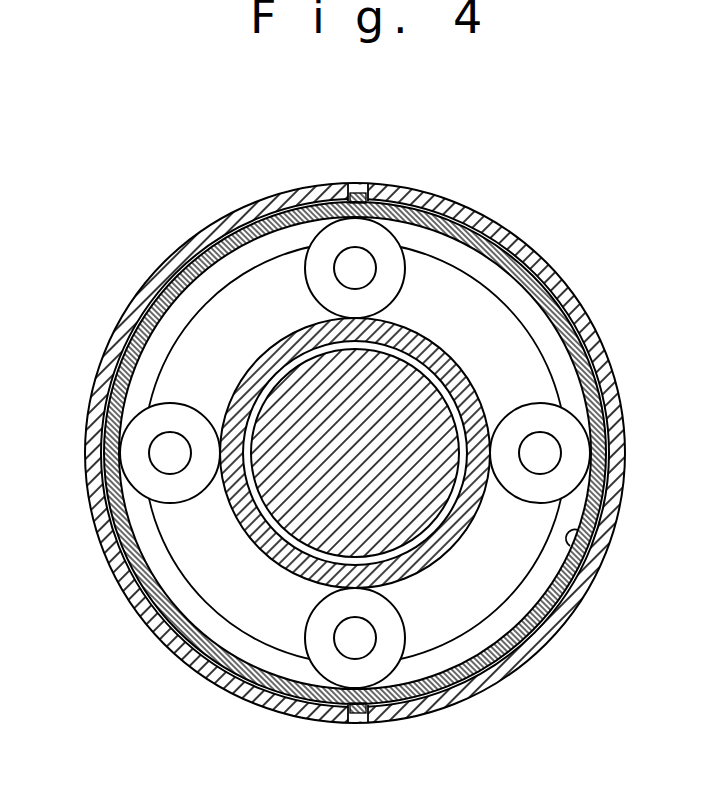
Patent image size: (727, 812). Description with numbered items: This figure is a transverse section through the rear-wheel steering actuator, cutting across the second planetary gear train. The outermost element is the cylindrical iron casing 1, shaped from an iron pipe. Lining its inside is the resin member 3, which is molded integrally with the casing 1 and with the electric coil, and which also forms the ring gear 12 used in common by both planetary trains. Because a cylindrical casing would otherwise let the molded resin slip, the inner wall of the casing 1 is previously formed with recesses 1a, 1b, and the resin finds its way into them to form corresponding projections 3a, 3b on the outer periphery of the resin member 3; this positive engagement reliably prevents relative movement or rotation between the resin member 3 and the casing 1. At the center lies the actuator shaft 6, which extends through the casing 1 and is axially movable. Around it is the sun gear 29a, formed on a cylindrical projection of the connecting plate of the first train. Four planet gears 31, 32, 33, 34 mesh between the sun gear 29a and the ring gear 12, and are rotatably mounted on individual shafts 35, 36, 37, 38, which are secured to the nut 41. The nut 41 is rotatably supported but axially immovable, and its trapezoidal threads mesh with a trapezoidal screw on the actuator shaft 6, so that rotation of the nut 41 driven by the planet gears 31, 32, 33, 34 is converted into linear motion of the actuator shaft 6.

The casing 1 is at (583, 307).
The recess 1a is at (353, 185).
The recess 1b is at (360, 713).
The resin member 3 is at (568, 585).
The projection 3a is at (368, 188).
The projection 3b is at (352, 708).
The actuator shaft 6 is at (422, 403).
The ring gear 12 is at (625, 551).
The sun gear 29a is at (445, 353).
The planet gear 31 is at (390, 255).
The planet gear 32 is at (378, 668).
The planet gear 33 is at (140, 468).
The planet gear 34 is at (568, 467).
The shaft 35 is at (342, 255).
The shaft 36 is at (347, 642).
The shaft 37 is at (167, 442).
The shaft 38 is at (542, 448).
The nut 41 is at (197, 562).